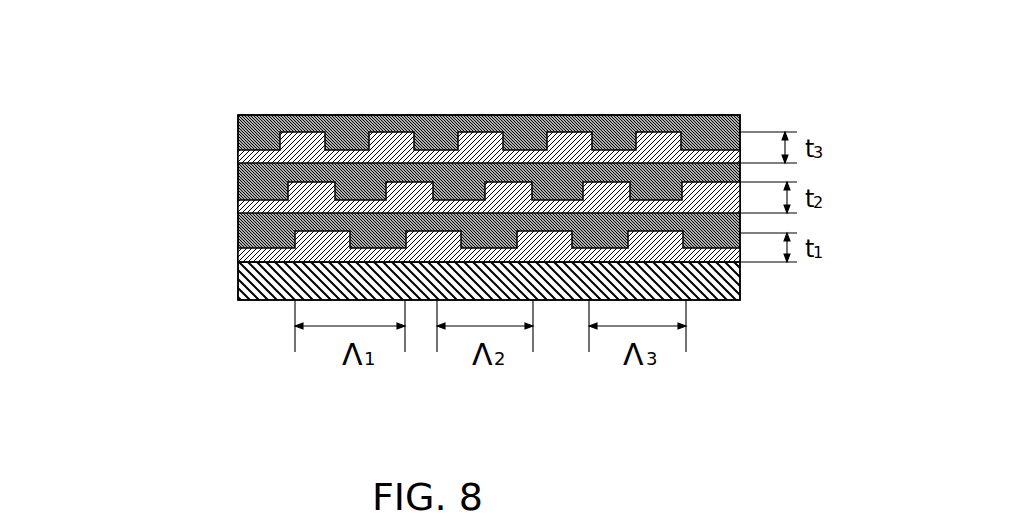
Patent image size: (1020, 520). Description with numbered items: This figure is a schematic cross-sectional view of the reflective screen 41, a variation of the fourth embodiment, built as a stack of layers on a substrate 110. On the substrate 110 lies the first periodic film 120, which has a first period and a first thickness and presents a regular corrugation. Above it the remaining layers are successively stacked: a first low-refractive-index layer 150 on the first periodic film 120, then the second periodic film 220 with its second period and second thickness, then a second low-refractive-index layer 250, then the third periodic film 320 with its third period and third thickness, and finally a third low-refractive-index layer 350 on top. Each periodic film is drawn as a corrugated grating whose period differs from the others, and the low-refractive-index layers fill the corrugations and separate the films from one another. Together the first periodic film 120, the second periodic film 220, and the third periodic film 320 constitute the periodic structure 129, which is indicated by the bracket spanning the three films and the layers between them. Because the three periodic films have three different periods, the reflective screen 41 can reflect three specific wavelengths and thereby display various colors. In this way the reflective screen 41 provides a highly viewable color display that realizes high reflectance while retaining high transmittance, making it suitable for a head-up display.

The reflective screen 41 is at (827, 97).
The substrate 110 is at (263, 297).
The first periodic film 120 is at (422, 263).
The first low-refractive-index layer 150 is at (238, 233).
The second periodic film 220 is at (238, 212).
The second low-refractive-index layer 250 is at (238, 177).
The third periodic film 320 is at (236, 157).
The third low-refractive-index layer 350 is at (236, 124).
The periodic structure 129 is at (381, 180).